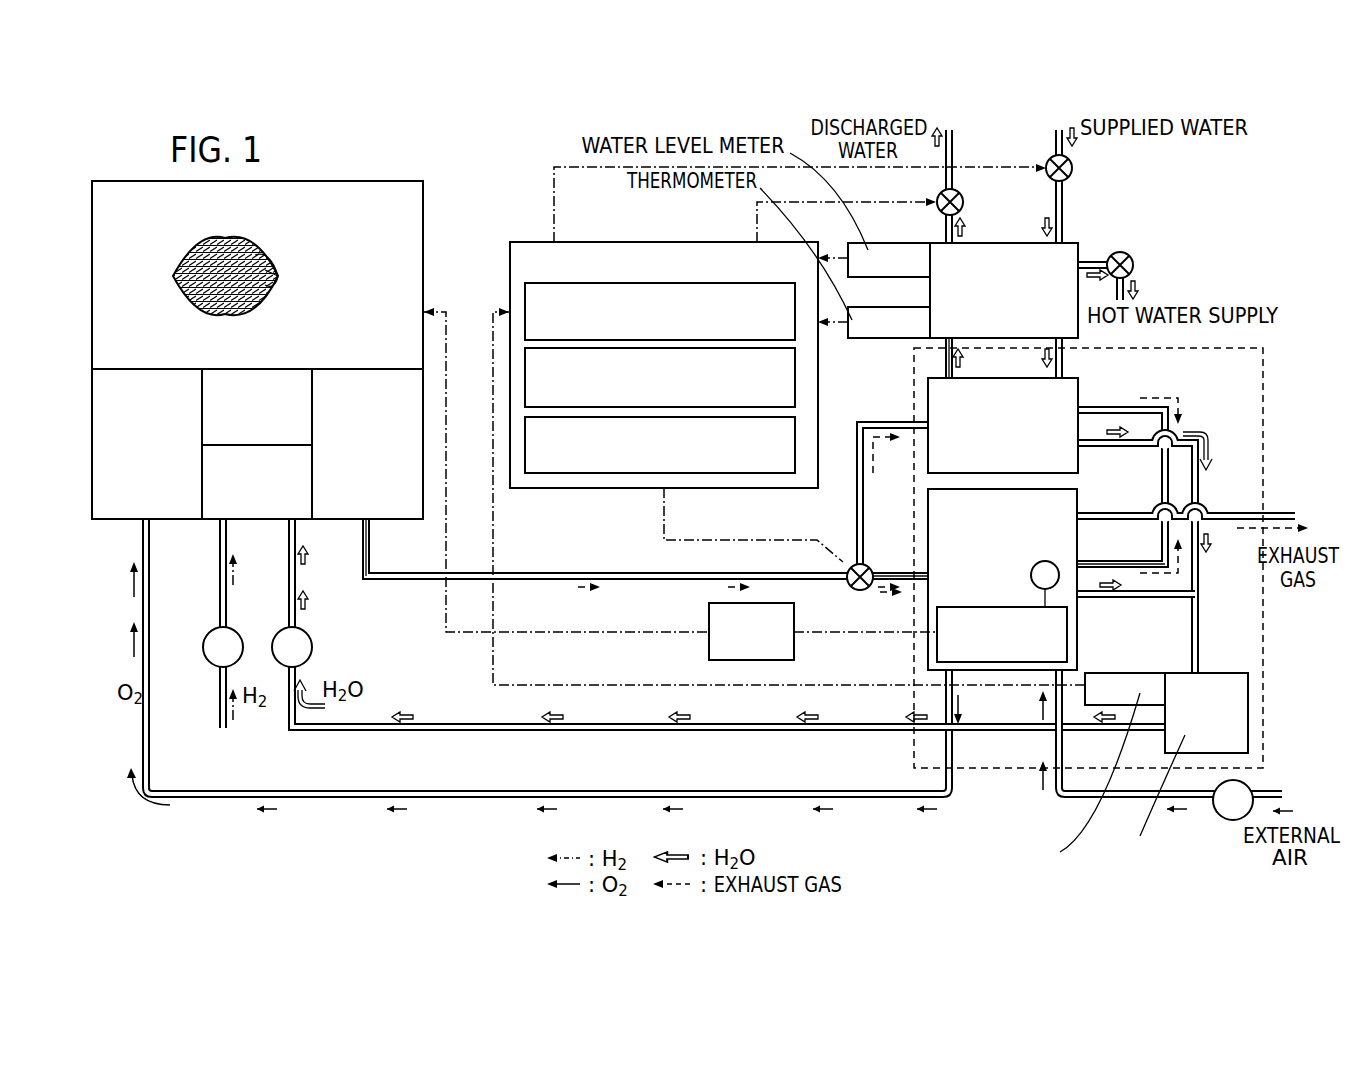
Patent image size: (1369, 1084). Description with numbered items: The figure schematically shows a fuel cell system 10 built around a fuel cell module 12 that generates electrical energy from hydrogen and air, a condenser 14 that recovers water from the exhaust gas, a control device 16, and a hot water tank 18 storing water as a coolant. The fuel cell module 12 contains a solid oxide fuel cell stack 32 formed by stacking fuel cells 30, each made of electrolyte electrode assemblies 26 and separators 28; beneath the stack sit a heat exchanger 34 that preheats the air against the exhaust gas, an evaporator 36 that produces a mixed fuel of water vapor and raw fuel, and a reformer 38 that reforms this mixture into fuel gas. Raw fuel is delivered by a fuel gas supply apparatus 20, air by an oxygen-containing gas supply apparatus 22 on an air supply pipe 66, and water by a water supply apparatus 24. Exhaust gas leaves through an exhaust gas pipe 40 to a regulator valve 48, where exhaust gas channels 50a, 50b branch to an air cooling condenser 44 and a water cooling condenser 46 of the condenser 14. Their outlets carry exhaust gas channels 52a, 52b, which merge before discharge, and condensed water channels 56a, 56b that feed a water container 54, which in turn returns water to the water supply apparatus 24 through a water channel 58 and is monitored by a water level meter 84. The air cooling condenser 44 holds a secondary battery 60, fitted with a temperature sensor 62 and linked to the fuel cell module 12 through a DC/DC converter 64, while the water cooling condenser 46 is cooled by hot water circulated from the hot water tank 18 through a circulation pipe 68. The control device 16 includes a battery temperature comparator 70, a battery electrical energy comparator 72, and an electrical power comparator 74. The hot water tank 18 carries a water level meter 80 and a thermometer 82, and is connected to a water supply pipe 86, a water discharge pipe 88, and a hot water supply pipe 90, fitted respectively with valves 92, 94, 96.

The fuel cell system 10 is at (536, 168).
The fuel cell module 12 is at (363, 181).
The condenser 14 is at (1264, 348).
The control device 16 is at (670, 242).
The hot water tank 18 is at (980, 243).
The fuel gas supply apparatus 20 is at (243, 640).
The oxygen-containing gas supply apparatus 22 is at (1220, 818).
The water supply apparatus 24 is at (311, 640).
The electrolyte electrode assembly 26 is at (266, 270).
The separator 28 is at (250, 258).
The solid oxide fuel cell 30 is at (349, 240).
The solid oxide fuel cell stack 32 is at (399, 233).
The heat exchanger 34 is at (385, 522).
The evaporator 36 is at (258, 522).
The reformer 38 is at (258, 368).
The exhaust gas pipe 40 is at (403, 582).
The air cooling condenser 44 is at (1080, 505).
The water cooling condenser 46 is at (1080, 390).
The regulator valve 48 is at (862, 591).
The exhaust gas channel 50a is at (889, 572).
The exhaust gas channel 50b is at (886, 422).
The exhaust gas channel 52a is at (1161, 531).
The exhaust gas channel 52b is at (1161, 465).
The water container 54 is at (1236, 673).
The condensed water channel 56a is at (1105, 600).
The condensed water channel 56b is at (1200, 580).
The water channel 58 is at (785, 731).
The secondary battery 60 is at (955, 603).
The temperature sensor 62 is at (1031, 575).
The DC/DC converter 64 is at (709, 618).
The air supply pipe 66 is at (790, 798).
The circulation pipe 68 is at (945, 363).
The battery temperature comparator 70 is at (530, 283).
The battery electrical energy comparator 72 is at (795, 387).
The electrical power comparator 74 is at (560, 473).
The water level meter 80 is at (893, 243).
The thermometer 82 is at (906, 306).
The water level meter 84 is at (1160, 673).
The water supply pipe 86 is at (1063, 208).
The water discharge pipe 88 is at (945, 183).
The hot water supply pipe 90 is at (1094, 259).
The valve 92 is at (1073, 170).
The valve 94 is at (962, 194).
The valve 96 is at (1134, 262).